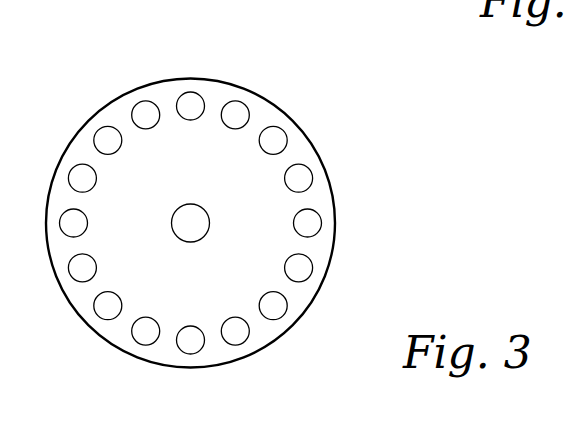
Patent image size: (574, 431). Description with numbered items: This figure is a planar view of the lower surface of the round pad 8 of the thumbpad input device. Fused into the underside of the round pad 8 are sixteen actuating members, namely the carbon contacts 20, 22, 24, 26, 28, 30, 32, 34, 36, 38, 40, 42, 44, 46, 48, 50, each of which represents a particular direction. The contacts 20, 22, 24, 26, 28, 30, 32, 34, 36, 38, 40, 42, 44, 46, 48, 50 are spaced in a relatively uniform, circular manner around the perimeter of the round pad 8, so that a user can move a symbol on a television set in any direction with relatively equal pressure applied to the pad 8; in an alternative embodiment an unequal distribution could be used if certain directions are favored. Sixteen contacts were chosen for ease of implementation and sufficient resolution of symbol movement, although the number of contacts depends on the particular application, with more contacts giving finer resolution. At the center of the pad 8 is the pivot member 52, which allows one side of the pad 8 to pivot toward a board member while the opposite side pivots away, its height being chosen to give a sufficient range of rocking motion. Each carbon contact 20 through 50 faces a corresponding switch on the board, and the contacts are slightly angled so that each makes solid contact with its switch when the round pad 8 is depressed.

The round pad 8 is at (176, 79).
The carbon contact 20 is at (145, 101).
The carbon contact 22 is at (97, 130).
The carbon contact 24 is at (70, 172).
The carbon contact 26 is at (59, 221).
The carbon contact 28 is at (69, 268).
The carbon contact 30 is at (96, 310).
The carbon contact 32 is at (136, 345).
The carbon contact 34 is at (190, 353).
The carbon contact 36 is at (239, 343).
The carbon contact 38 is at (283, 316).
The carbon contact 40 is at (310, 275).
The carbon contact 42 is at (321, 226).
The carbon contact 44 is at (310, 172).
The carbon contact 46 is at (283, 130).
The carbon contact 48 is at (245, 106).
The carbon contact 50 is at (198, 95).
The pivot member 52 is at (203, 209).